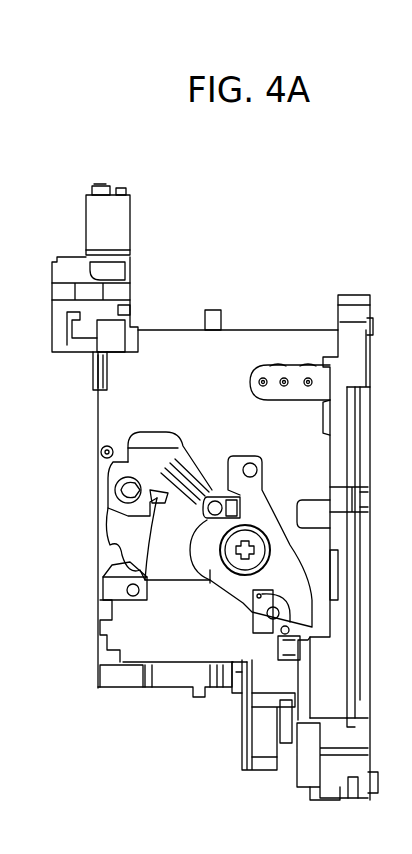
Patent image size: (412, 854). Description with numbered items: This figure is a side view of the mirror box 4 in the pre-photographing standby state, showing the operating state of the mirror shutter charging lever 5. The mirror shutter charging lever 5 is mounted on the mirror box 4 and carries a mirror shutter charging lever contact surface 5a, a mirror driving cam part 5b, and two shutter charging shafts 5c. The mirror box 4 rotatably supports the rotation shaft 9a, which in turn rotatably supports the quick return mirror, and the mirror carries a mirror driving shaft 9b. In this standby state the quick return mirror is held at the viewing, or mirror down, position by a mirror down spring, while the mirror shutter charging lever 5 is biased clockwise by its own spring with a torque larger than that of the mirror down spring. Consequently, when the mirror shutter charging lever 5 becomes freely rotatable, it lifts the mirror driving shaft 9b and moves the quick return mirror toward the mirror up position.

The mirror box 4 is at (185, 346).
The mirror shutter charging lever 5 is at (210, 575).
The mirror shutter charging lever contact surface 5a is at (247, 680).
The mirror driving cam part 5b is at (105, 518).
The shutter charging shafts 5c is at (104, 586).
The rotation shaft 9a is at (102, 452).
The mirror driving shaft 9b is at (103, 489).